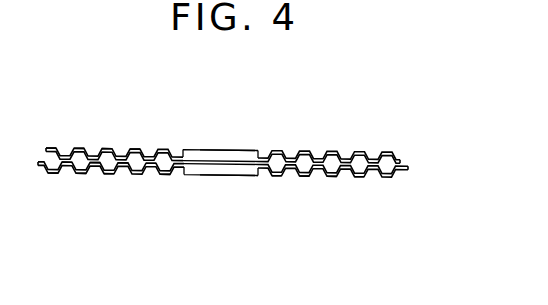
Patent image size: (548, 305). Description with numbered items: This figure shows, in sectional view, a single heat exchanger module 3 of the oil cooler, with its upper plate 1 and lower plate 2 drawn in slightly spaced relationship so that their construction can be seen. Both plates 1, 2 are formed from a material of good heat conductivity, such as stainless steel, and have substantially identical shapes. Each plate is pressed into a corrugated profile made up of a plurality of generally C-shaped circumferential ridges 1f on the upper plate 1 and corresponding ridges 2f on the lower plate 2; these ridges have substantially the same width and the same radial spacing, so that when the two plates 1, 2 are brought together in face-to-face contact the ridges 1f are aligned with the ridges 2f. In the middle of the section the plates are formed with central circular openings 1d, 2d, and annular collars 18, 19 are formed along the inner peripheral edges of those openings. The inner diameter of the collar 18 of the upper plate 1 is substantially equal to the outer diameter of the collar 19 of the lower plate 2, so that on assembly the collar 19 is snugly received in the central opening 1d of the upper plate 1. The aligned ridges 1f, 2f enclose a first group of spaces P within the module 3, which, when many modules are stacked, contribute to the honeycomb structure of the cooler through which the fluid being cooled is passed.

The upper plate 1 is at (245, 120).
The lower plate 2 is at (239, 204).
The heat exchanger module 3 is at (256, 166).
The C-shaped circumferential ridges 1f is at (142, 149).
The C-shaped circumferential ridges 2f is at (73, 177).
The central circular opening 1d is at (257, 150).
The central circular opening 2d is at (253, 177).
The annular collar 18 is at (186, 150).
The annular collar 19 is at (192, 177).
The first group of spaces P is at (55, 176).